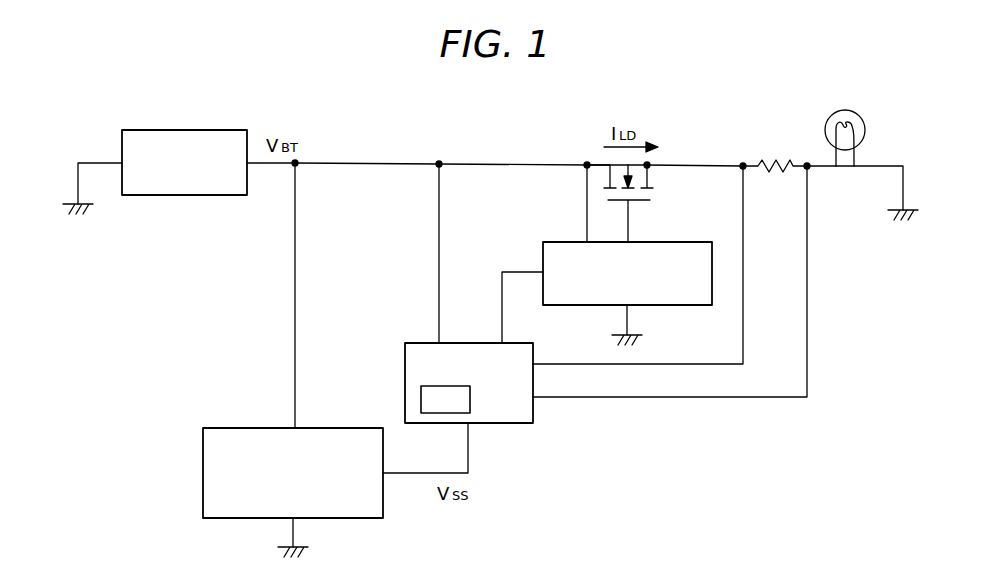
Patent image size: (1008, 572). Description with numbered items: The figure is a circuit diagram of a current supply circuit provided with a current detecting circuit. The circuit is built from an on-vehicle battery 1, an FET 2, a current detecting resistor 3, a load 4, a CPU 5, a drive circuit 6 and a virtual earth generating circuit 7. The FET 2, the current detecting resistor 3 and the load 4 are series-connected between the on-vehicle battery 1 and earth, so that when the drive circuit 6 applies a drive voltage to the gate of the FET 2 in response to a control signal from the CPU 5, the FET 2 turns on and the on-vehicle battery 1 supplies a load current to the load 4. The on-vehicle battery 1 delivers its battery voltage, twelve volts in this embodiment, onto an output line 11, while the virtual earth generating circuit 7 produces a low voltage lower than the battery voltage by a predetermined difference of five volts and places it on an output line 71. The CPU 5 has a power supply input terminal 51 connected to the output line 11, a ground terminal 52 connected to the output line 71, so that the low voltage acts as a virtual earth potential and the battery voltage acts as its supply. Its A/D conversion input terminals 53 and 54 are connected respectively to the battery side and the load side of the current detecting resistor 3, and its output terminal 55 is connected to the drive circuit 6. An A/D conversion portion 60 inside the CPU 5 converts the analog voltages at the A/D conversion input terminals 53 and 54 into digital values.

The on-vehicle battery 1 is at (185, 130).
The output line 11 is at (358, 163).
The FET 2 is at (655, 197).
The current detecting resistor 3 is at (766, 160).
The load 4 is at (842, 111).
The CPU 5 is at (447, 383).
The drive circuit 6 is at (570, 242).
The virtual earth generating circuit 7 is at (203, 473).
The power supply input terminal 51 is at (436, 343).
The ground terminal 52 is at (470, 430).
The A/D conversion input terminal 53 is at (535, 360).
The A/D conversion input terminal 54 is at (535, 406).
The output terminal 55 is at (500, 343).
The A/D conversion portion 60 is at (471, 398).
The output line 71 is at (408, 473).